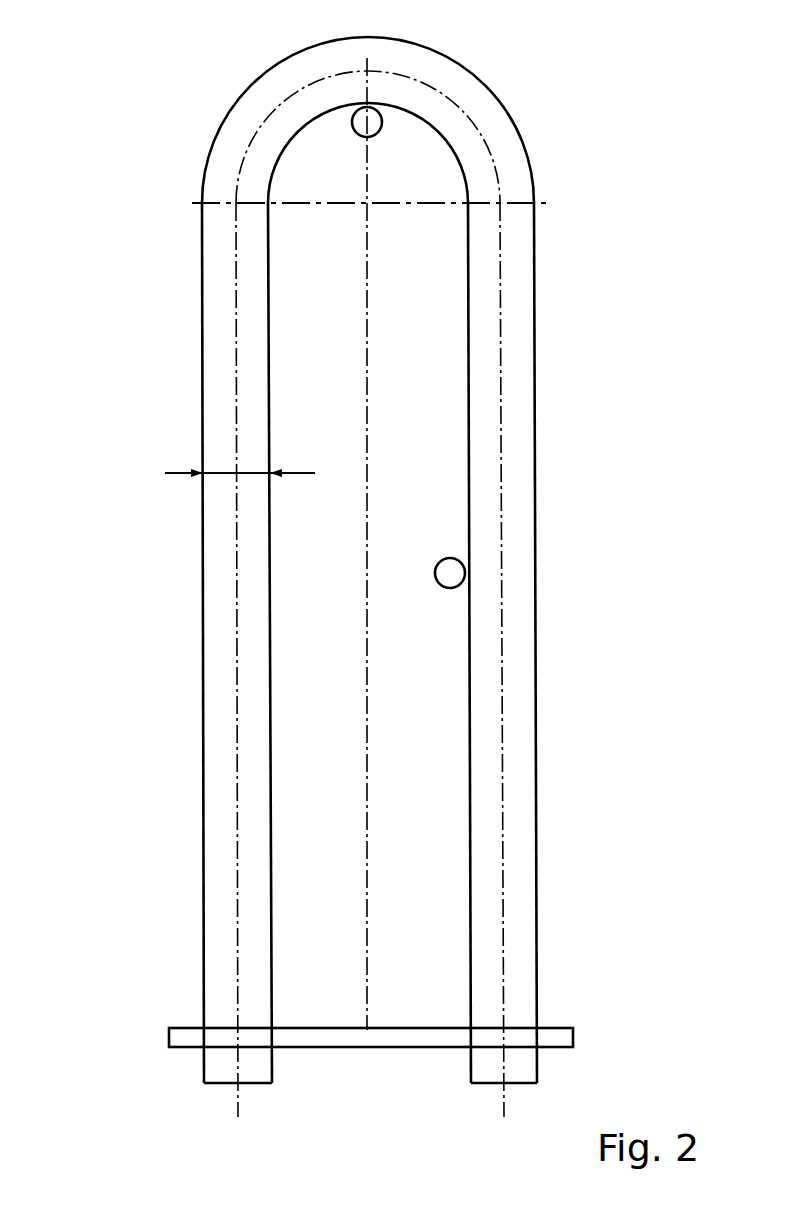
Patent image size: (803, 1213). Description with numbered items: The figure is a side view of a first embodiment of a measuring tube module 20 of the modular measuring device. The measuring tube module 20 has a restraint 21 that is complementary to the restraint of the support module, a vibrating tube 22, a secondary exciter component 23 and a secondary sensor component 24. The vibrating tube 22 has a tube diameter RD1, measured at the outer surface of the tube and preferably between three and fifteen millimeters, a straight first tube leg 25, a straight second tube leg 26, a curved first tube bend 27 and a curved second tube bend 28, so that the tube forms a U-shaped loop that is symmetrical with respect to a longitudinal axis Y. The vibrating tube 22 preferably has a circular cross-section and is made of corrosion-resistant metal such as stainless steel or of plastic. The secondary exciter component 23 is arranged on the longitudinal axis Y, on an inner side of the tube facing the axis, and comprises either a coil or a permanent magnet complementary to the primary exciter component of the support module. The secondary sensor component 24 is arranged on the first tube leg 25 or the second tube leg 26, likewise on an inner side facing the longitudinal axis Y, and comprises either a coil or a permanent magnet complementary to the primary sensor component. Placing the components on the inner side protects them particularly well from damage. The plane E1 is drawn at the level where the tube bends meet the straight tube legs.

The measuring tube module 20 is at (120, 85).
The restraint 21 is at (167, 1038).
The vibrating tube 22 is at (226, 1092).
The secondary exciter component 23 is at (365, 107).
The secondary sensor component 24 is at (463, 553).
The first tube leg 25 is at (197, 285).
The second tube leg 26 is at (547, 290).
The first tube bend 27 is at (232, 103).
The second tube bend 28 is at (513, 105).
The plane / level E1 is at (193, 203).
The tube diameter RD1 is at (220, 472).
The longitudinal axis Y is at (368, 973).